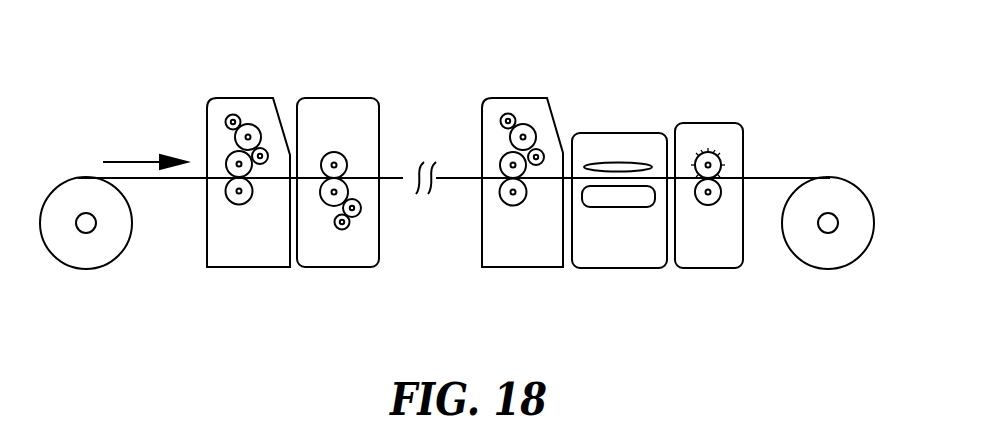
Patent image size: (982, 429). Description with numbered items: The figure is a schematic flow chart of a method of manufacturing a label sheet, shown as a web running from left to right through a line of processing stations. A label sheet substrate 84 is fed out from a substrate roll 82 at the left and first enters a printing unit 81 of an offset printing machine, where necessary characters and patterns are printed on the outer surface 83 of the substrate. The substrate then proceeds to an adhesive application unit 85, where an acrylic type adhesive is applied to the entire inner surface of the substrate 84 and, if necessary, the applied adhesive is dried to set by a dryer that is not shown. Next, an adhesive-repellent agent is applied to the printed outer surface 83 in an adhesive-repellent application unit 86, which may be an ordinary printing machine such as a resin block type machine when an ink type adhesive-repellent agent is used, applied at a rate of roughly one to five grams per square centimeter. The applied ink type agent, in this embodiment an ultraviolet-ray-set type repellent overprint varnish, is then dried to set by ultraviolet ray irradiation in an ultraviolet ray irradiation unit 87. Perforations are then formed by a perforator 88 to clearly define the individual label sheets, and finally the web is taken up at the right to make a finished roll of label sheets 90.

The printing unit 81 is at (245, 97).
The substrate roll 82 is at (75, 195).
The outer surface of the substrate 83 is at (392, 177).
The label sheet substrate 84 is at (403, 178).
The adhesive application unit 85 is at (337, 97).
The adhesive-repellent application unit 86 is at (522, 97).
The ultraviolet ray irradiation unit 87 is at (620, 132).
The perforator 88 is at (715, 123).
The finished roll of label sheets 90 is at (837, 177).